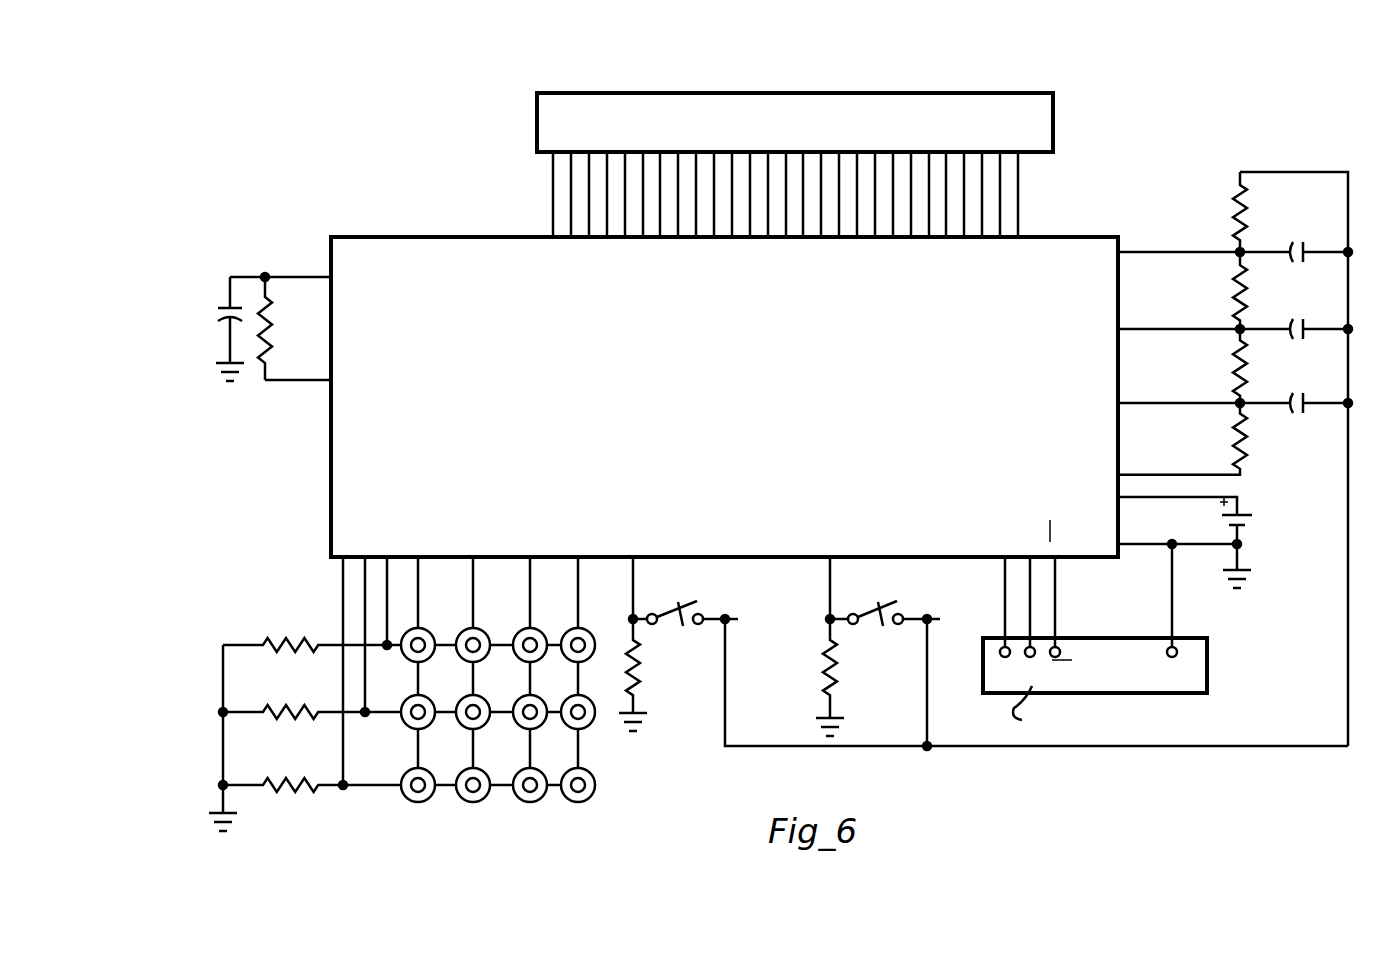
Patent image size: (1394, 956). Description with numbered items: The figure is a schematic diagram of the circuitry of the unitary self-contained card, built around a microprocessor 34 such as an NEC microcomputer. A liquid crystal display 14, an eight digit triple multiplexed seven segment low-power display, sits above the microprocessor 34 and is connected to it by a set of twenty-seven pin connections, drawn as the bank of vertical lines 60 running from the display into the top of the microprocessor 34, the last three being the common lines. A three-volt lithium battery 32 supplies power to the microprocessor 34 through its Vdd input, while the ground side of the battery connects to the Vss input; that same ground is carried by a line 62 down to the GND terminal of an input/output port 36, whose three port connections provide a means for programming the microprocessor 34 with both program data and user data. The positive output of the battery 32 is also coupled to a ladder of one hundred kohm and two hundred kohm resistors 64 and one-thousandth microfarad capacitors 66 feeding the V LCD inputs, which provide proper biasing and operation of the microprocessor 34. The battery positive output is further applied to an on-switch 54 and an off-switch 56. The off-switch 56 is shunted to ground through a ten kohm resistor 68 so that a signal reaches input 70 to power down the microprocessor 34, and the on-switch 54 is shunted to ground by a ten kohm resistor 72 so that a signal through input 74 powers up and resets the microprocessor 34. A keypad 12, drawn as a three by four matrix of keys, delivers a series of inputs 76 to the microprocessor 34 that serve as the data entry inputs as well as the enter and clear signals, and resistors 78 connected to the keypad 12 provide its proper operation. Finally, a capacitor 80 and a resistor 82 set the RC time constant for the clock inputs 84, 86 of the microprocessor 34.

The keypad 12 is at (598, 752).
The liquid crystal display 14 is at (1055, 118).
The three-volt lithium battery 32 is at (1310, 584).
The microprocessor 34 is at (754, 372).
The input/output port 36 is at (1124, 636).
The on-switch 54 is at (705, 596).
The off-switch 56 is at (905, 596).
The display drive lines 60 is at (1028, 188).
The ground line 62 is at (1172, 612).
The resistor voltage divider 64 is at (1208, 186).
The filter capacitors 66 is at (1358, 166).
The 10 kohm resistor 68 is at (822, 674).
The input 70 is at (826, 590).
The 10 kohm resistor 72 is at (646, 695).
The input 74 is at (632, 590).
The inputs 76 is at (330, 574).
The resistors 78 is at (264, 628).
The capacitor 80 is at (228, 305).
The resistor 82 is at (258, 368).
The clock input 84 is at (315, 276).
The clock input 86 is at (312, 380).